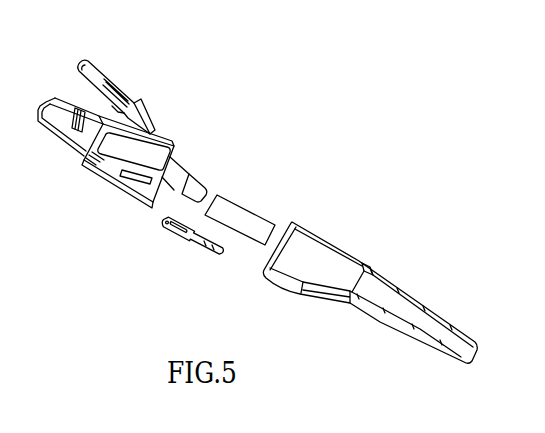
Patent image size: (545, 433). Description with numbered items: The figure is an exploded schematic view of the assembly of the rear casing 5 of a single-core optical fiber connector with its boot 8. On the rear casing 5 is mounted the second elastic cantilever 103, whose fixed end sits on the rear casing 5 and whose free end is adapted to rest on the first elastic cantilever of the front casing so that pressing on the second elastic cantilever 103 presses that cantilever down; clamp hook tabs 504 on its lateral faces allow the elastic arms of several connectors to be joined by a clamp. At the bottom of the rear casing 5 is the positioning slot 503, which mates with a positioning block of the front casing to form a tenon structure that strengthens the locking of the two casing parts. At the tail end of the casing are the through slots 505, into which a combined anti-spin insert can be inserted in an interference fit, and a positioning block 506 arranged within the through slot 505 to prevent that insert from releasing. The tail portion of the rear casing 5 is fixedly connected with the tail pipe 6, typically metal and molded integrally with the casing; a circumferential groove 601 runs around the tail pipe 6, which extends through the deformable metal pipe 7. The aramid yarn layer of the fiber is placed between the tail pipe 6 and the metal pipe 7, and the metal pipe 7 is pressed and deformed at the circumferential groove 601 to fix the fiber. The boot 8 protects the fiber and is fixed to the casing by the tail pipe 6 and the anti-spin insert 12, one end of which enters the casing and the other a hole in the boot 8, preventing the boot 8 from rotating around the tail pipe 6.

The second elastic cantilever 103 is at (88, 63).
The clamp hook tabs 504 is at (119, 93).
The positioning slot 503 is at (80, 166).
The rear casing 5 is at (118, 189).
The positioning block 506 is at (143, 181).
The through slots 505 is at (149, 198).
The tail pipe 6 is at (211, 153).
The circumferential groove 601 is at (190, 183).
The metal pipe 7 is at (247, 215).
The anti-spin insert 12 is at (190, 238).
The boot 8 is at (375, 288).